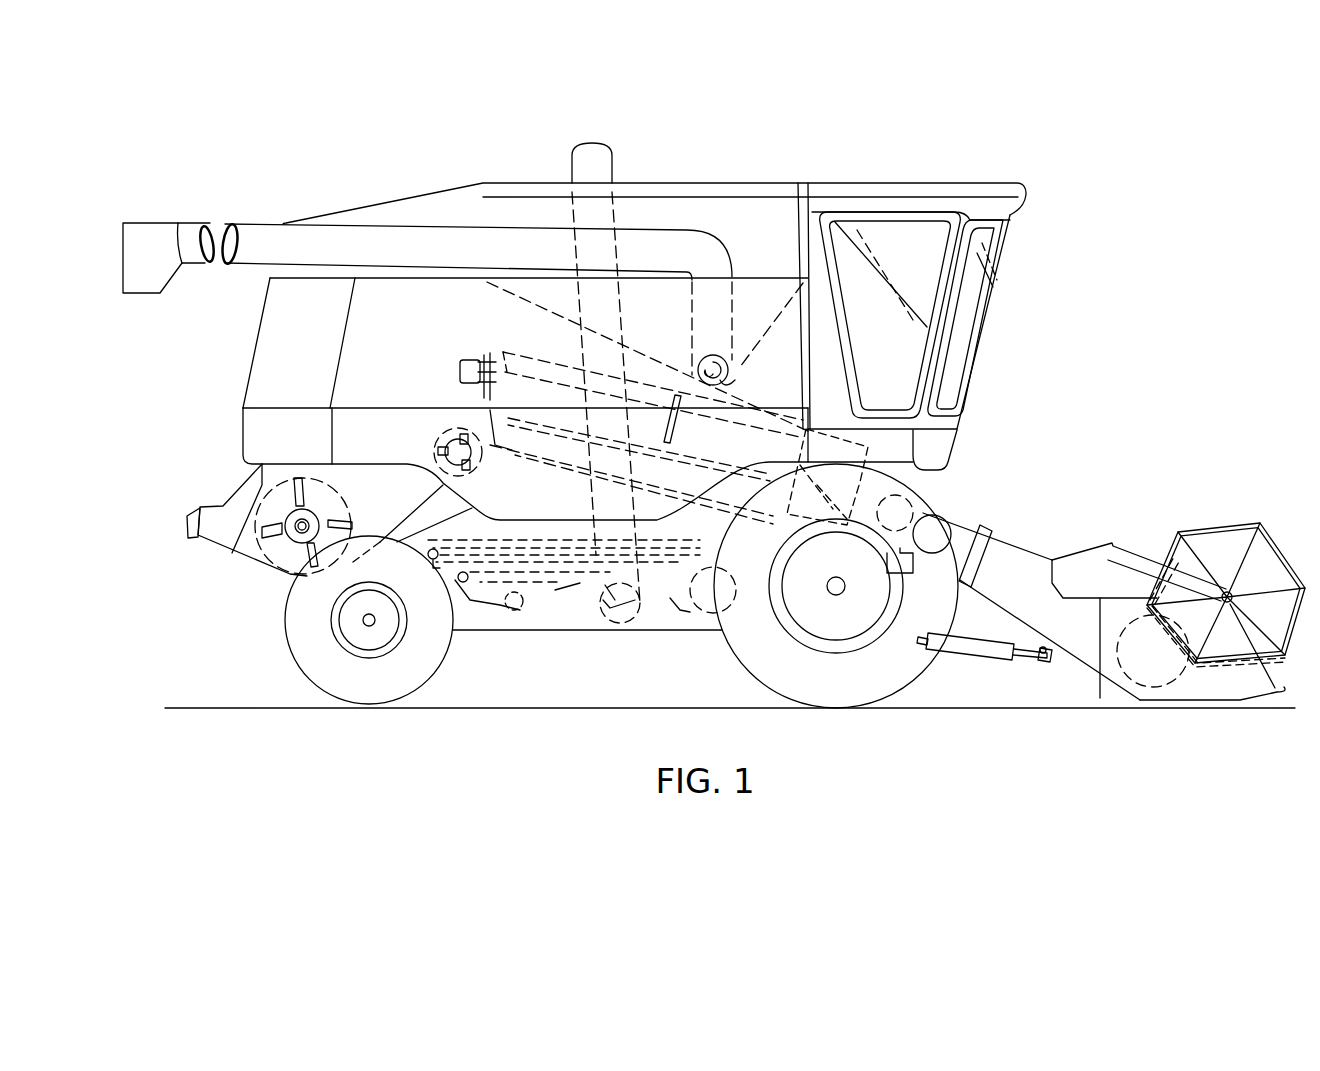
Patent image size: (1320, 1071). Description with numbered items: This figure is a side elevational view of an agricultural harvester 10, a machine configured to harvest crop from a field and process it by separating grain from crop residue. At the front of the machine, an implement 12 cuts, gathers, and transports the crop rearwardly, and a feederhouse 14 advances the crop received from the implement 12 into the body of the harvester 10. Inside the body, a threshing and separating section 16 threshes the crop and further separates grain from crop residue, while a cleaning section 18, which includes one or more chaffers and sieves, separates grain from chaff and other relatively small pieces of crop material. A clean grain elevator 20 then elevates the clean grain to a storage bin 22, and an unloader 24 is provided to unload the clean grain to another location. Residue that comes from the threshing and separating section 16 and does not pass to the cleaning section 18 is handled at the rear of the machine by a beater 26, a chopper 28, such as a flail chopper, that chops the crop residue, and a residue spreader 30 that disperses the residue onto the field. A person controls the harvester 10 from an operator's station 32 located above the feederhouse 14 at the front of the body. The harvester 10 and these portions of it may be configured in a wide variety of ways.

The agricultural harvester 10 is at (288, 155).
The implement 12 is at (1199, 683).
The feederhouse 14 is at (966, 520).
The threshing and separating section 16 is at (505, 340).
The cleaning section 18 is at (508, 540).
The clean grain elevator 20 is at (622, 325).
The storage bin 22 is at (777, 330).
The unloader 24 is at (412, 224).
The beater 26 is at (432, 436).
The chopper 28 is at (345, 486).
The residue spreader 30 is at (214, 505).
The operator's station 32 is at (928, 183).